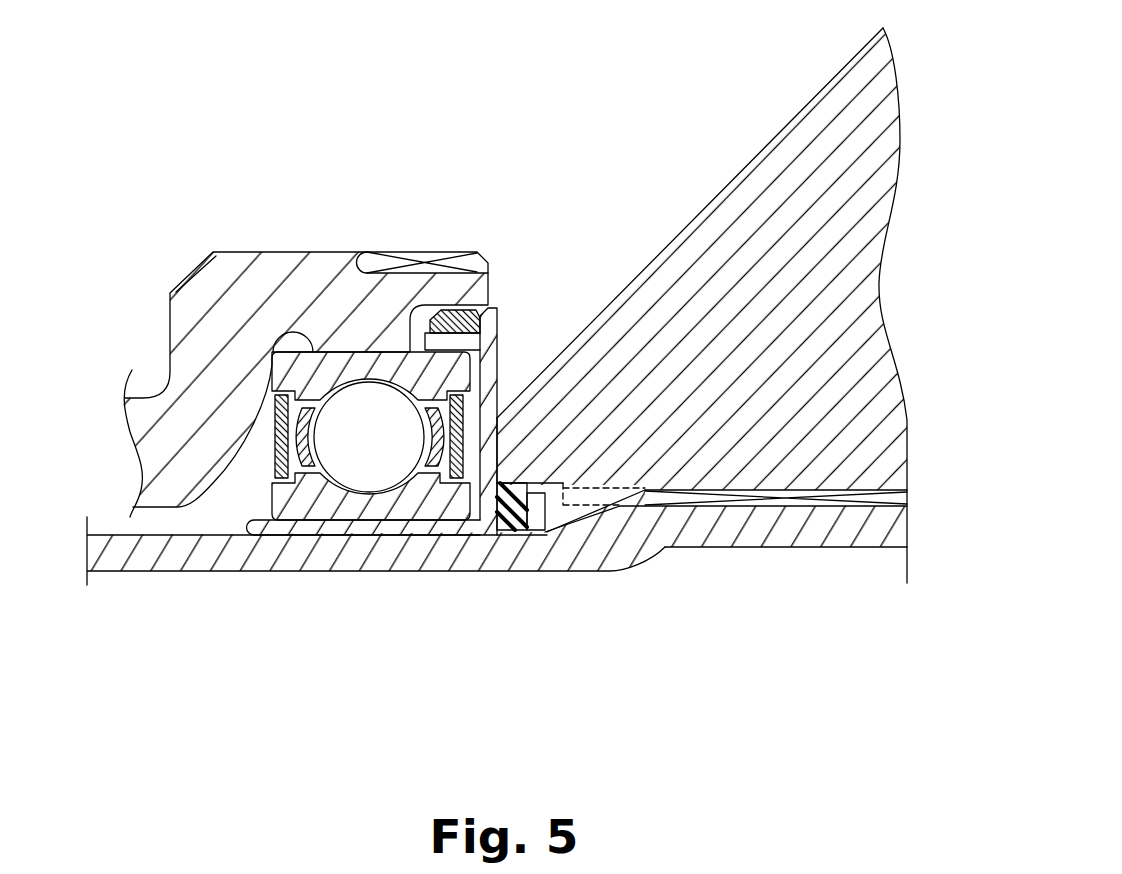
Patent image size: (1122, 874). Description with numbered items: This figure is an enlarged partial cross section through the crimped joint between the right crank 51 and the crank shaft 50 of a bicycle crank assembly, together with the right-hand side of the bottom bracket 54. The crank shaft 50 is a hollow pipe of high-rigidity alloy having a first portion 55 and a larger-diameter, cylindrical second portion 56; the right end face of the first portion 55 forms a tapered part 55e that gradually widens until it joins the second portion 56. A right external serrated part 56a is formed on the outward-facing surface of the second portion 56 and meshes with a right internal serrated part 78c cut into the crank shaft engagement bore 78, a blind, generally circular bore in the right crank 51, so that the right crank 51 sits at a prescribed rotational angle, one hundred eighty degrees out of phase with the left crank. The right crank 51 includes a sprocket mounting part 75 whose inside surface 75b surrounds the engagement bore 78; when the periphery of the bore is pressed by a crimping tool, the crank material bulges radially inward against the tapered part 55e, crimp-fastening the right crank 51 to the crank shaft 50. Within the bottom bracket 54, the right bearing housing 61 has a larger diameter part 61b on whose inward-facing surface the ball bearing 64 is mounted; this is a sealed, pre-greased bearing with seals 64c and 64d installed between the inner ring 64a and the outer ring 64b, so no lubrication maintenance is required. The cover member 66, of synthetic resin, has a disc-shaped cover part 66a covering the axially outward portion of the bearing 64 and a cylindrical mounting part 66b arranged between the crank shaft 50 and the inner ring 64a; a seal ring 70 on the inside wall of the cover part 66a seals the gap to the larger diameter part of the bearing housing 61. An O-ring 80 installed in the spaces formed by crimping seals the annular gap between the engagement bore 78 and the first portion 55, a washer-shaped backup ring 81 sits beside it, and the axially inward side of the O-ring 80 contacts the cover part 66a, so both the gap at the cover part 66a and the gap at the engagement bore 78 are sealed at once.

The crank shaft 50 is at (112, 517).
The right crank 51 is at (710, 150).
The bottom bracket 54 is at (365, 222).
The first portion 55 is at (177, 552).
The tapered part 55e is at (570, 522).
The second portion 56 is at (725, 530).
The right external serrated part 56a is at (813, 492).
The right bearing housing 61 is at (272, 262).
The larger diameter part 61b is at (300, 283).
The right ball bearing 64 is at (385, 363).
The inner ring 64a is at (315, 502).
The outer ring 64b is at (297, 368).
The seal 64c is at (262, 443).
The seal 64d is at (457, 480).
The right cover member 66 is at (407, 533).
The cover part 66a is at (490, 383).
The mounting part 66b is at (365, 537).
The seal ring 70 is at (450, 305).
The sprocket mounting part 75 is at (700, 277).
The inside surface 75b is at (485, 482).
The crank shaft engagement bore 78 is at (780, 506).
The right internal serrated part 78c is at (867, 507).
The O-ring 80 is at (515, 533).
The backup ring 81 is at (543, 530).